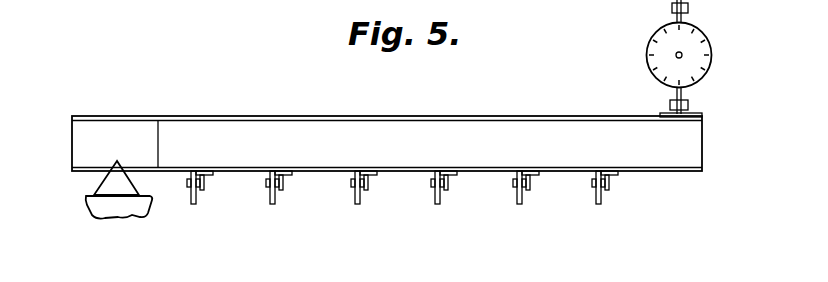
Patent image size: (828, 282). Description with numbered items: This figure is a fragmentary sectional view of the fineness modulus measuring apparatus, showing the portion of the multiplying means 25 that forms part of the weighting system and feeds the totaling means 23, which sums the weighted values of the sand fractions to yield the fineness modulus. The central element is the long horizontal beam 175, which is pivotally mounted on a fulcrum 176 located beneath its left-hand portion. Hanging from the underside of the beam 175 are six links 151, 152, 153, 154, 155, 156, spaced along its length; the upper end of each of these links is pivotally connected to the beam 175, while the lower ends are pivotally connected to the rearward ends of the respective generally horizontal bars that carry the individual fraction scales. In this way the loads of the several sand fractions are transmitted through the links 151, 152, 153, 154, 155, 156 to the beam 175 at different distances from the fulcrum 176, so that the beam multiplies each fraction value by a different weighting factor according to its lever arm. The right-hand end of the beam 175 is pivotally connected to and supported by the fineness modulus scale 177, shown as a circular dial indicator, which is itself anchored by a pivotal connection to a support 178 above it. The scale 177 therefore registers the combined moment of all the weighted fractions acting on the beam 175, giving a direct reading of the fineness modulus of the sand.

The totaling means 23 is at (645, 69).
The multiplying means 25 is at (341, 107).
The link 151 is at (598, 204).
The link 152 is at (519, 204).
The link 153 is at (437, 204).
The link 154 is at (357, 204).
The link 155 is at (272, 204).
The link 156 is at (193, 204).
The beam 175 is at (210, 116).
The fulcrum 176 is at (100, 186).
The fineness modulus scale 177 is at (648, 50).
The support 178 is at (658, 58).